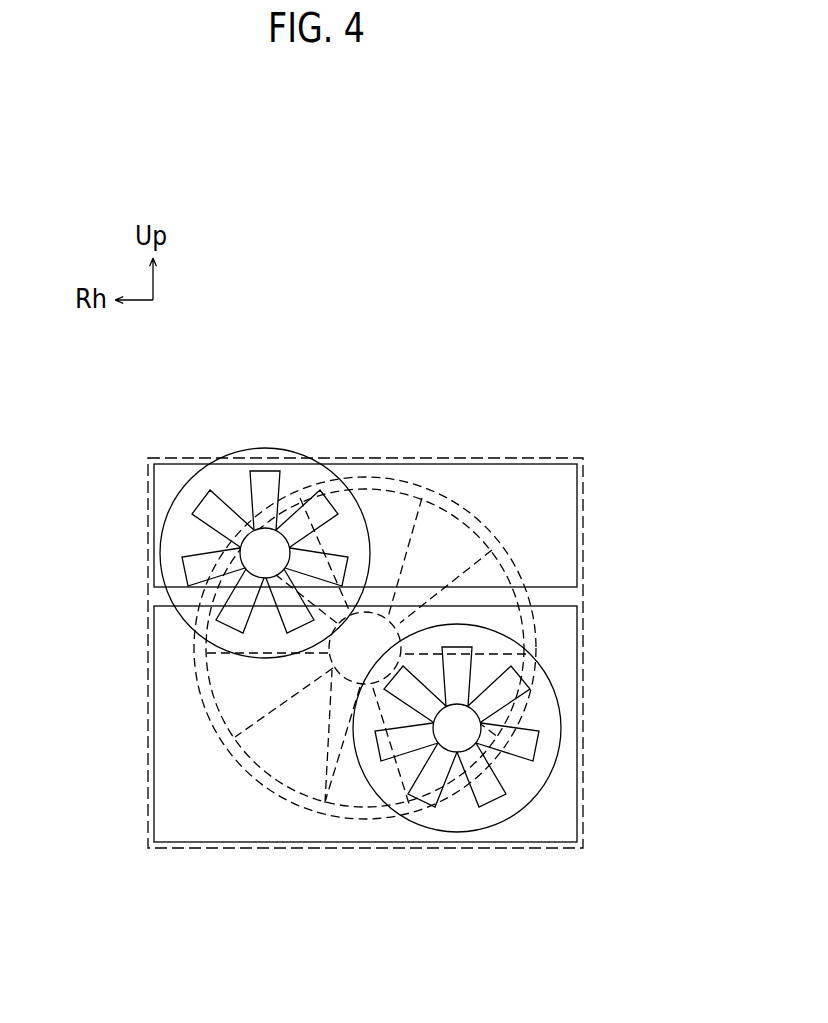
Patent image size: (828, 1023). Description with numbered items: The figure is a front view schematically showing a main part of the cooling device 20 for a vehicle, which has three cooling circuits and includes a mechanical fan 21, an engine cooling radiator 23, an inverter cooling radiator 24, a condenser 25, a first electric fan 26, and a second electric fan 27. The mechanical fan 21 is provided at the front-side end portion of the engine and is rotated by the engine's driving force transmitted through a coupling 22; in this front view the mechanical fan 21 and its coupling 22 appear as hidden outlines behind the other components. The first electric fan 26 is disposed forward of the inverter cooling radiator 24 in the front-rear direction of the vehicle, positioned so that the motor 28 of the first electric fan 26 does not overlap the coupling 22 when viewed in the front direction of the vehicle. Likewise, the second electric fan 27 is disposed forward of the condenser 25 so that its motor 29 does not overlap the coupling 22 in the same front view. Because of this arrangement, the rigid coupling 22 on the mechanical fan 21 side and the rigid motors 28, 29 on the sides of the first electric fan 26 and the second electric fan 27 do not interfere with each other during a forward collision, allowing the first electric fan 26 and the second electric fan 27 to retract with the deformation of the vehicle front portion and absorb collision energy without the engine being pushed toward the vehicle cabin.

The cooling device 20 is at (434, 436).
The mechanical fan 21 is at (465, 551).
The coupling 22 is at (328, 655).
The engine cooling radiator 23 is at (585, 595).
The inverter cooling radiator 24 is at (510, 482).
The condenser 25 is at (173, 789).
The first electric fan 26 is at (265, 509).
The second electric fan 27 is at (509, 728).
The motor 28 is at (284, 534).
The motor 29 is at (481, 731).